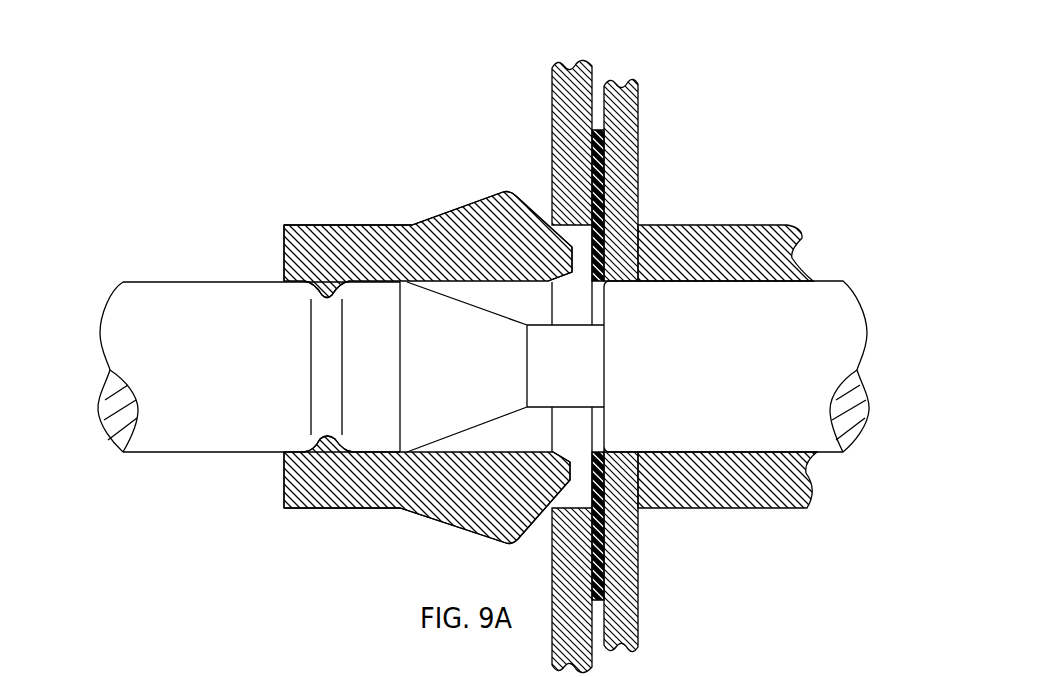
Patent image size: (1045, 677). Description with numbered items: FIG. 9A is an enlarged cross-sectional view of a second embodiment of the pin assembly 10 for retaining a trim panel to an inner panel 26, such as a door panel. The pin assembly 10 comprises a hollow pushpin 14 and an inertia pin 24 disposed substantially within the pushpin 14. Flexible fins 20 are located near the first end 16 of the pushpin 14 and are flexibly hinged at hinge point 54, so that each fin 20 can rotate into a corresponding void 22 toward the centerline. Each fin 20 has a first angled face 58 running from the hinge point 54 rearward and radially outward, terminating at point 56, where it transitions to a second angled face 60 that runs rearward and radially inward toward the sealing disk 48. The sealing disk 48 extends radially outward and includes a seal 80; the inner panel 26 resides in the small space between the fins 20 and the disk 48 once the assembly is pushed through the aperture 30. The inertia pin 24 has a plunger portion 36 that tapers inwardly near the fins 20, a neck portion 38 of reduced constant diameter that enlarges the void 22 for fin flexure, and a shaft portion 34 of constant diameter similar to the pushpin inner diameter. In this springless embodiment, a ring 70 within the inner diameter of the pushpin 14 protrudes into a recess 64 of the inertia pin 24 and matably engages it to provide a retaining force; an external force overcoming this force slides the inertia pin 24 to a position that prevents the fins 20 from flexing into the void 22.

The pin assembly 10 is at (160, 165).
The hollow pushpin 14 is at (760, 225).
The first end 16 is at (284, 247).
The flexible fin 20 is at (336, 216).
The void 22 is at (514, 312).
The inertia pin 24 is at (824, 270).
The inner panel 26 is at (552, 133).
The aperture 30 is at (638, 222).
The shaft portion 34 is at (689, 380).
The plunger portion 36 is at (232, 380).
The neck portion 38 is at (552, 380).
The sealing disk 48 is at (637, 568).
The hinge point 54 is at (390, 225).
The transition point 56 is at (513, 193).
The first angled face 58 is at (457, 210).
The second angled face 60 is at (534, 214).
The recess 64 is at (324, 292).
The ring 70 is at (313, 318).
The seal 80 is at (603, 133).